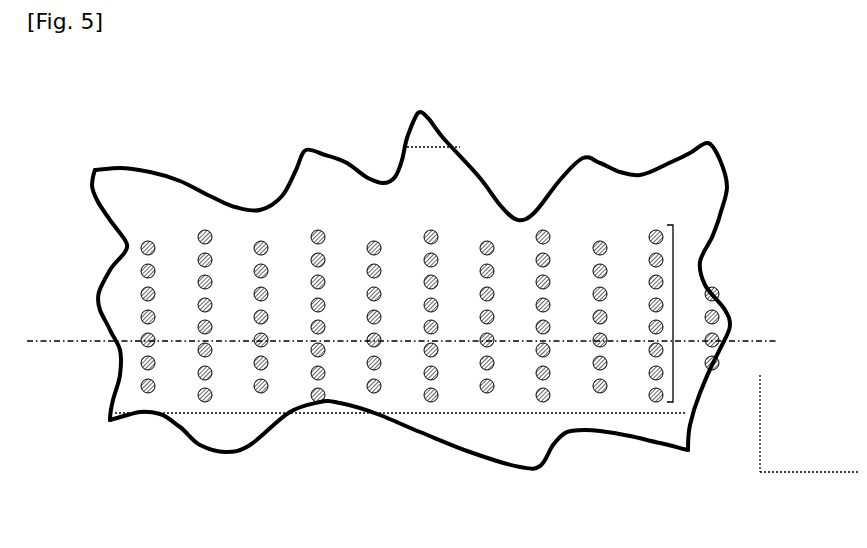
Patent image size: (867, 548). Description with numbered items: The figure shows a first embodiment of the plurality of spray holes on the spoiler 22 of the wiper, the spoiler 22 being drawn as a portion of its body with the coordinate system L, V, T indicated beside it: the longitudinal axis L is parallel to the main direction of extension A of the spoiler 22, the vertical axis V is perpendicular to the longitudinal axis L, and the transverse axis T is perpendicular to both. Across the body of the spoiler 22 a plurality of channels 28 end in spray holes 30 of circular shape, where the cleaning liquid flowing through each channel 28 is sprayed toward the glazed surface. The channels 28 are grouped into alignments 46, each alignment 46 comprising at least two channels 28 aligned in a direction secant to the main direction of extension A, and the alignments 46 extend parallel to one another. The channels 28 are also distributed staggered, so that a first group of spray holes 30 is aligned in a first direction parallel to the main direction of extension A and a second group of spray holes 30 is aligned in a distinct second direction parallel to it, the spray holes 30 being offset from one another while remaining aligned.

The spoiler 22 is at (443, 188).
The channels 28 is at (374, 390).
The spray holes 30 is at (431, 400).
The alignment 46 is at (673, 313).
The main direction of extension A is at (37, 342).
The vertical axis V is at (760, 430).
The transverse axis T is at (760, 472).
The longitudinal axis L is at (798, 472).